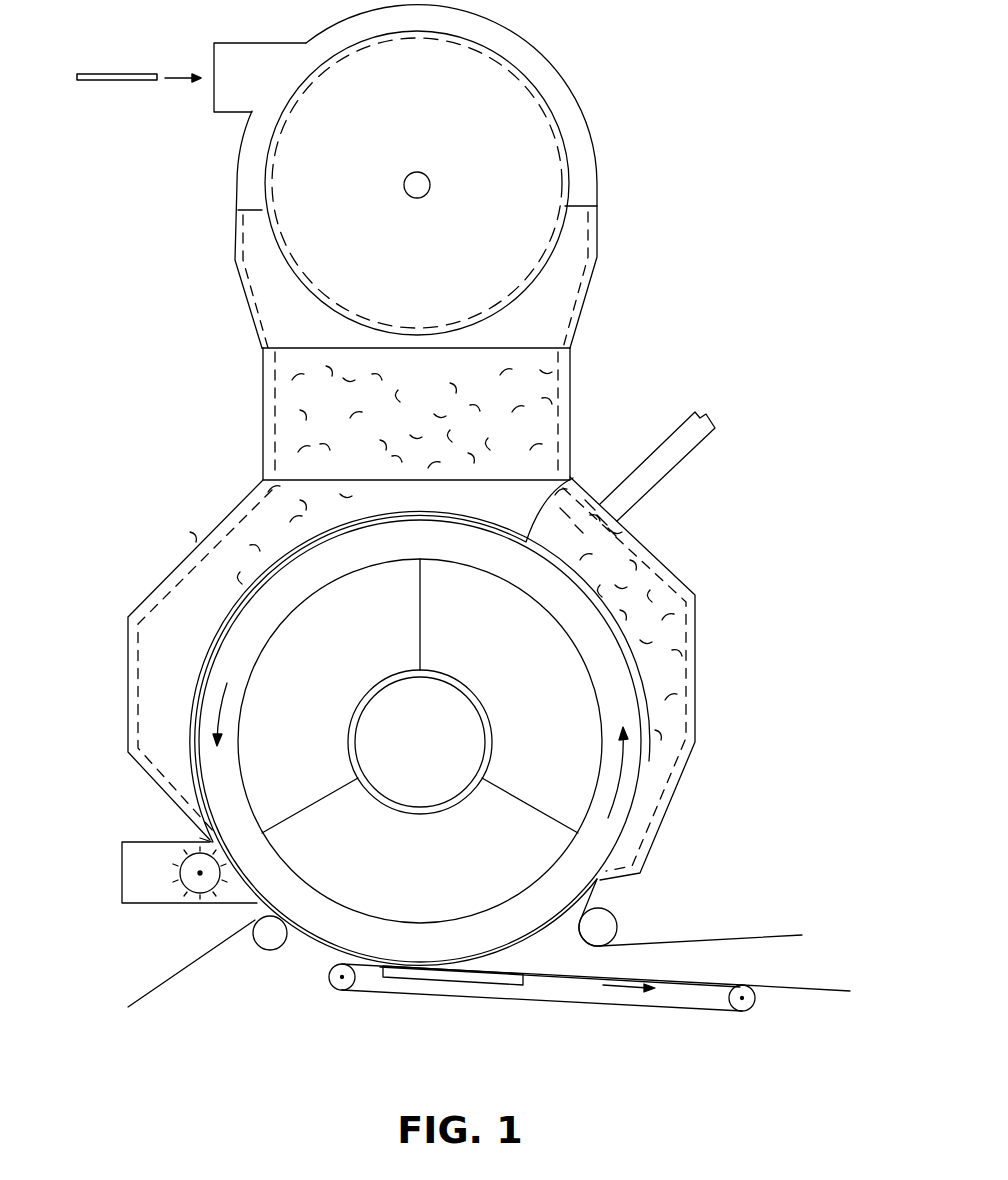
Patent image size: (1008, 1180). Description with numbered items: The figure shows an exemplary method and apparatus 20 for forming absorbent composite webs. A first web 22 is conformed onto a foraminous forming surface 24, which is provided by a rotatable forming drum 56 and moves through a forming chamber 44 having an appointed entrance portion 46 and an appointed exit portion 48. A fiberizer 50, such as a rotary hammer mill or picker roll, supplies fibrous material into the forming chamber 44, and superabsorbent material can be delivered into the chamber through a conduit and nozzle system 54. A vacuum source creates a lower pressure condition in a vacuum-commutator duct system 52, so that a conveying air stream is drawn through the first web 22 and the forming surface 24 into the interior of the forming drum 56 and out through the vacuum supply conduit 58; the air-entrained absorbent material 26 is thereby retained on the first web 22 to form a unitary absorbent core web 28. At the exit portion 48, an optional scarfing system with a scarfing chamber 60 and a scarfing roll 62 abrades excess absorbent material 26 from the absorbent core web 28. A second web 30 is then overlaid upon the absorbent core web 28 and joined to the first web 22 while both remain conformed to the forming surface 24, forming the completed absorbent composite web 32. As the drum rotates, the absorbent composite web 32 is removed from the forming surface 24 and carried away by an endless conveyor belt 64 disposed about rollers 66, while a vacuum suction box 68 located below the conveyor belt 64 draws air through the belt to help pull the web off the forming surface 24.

The method 20 is at (622, 113).
The first web 22 is at (573, 478).
The forming surface 24 is at (386, 523).
The absorbent material 26 is at (517, 370).
The absorbent core web 28 is at (320, 533).
The second web 30 is at (138, 998).
The absorbent composite web 32 is at (840, 983).
The forming chamber 44 is at (193, 563).
The entrance portion 46 is at (612, 894).
The exit portion 48 is at (190, 830).
The fiberizer 50 is at (242, 173).
The vacuum-commutator duct system 52 is at (301, 689).
The conduit and nozzle system 54 is at (690, 412).
The forming drum 56 is at (348, 912).
The vacuum supply conduit 58 is at (428, 814).
The scarfing chamber 60 is at (132, 908).
The scarfing roll 62 is at (192, 904).
The conveyor belt 64 is at (583, 1008).
The rollers 66 is at (332, 983).
The vacuum suction box 68 is at (403, 972).